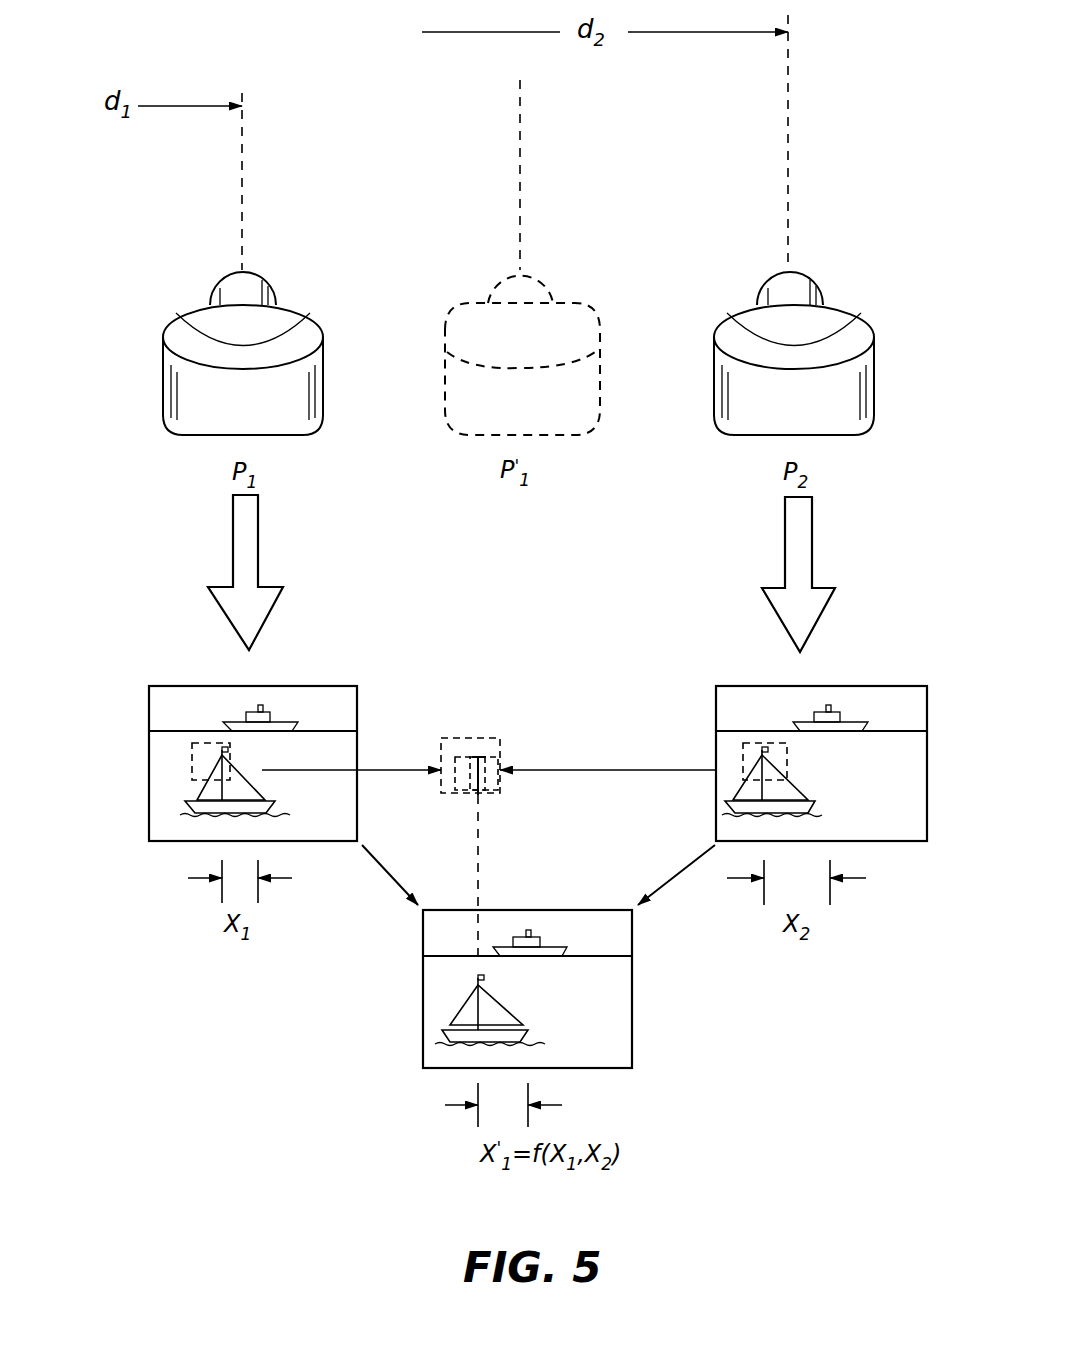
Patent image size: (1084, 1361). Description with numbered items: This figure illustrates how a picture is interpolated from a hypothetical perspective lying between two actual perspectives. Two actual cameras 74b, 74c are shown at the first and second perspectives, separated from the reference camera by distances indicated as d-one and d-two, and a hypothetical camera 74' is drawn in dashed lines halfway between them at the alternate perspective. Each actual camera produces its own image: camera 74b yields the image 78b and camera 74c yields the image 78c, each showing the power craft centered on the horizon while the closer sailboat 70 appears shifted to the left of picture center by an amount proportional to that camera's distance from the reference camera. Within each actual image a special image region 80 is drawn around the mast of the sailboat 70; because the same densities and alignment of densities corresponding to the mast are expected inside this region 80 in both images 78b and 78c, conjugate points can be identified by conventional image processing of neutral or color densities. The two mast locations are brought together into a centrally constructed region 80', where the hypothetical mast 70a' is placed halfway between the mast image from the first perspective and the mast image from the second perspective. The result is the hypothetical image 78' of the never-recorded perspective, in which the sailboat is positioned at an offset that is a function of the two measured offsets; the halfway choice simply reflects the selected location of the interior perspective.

The camera 74b is at (322, 320).
The camera 74c is at (872, 320).
The hypothetical camera 74' is at (552, 339).
The image 78b is at (360, 742).
The image 78c is at (890, 686).
The hypothetical image 78' is at (570, 989).
The image region 80 is at (409, 724).
The centrally constructed region 80' is at (522, 731).
The sailboat 70 is at (262, 785).
The mast 70a' is at (436, 838).